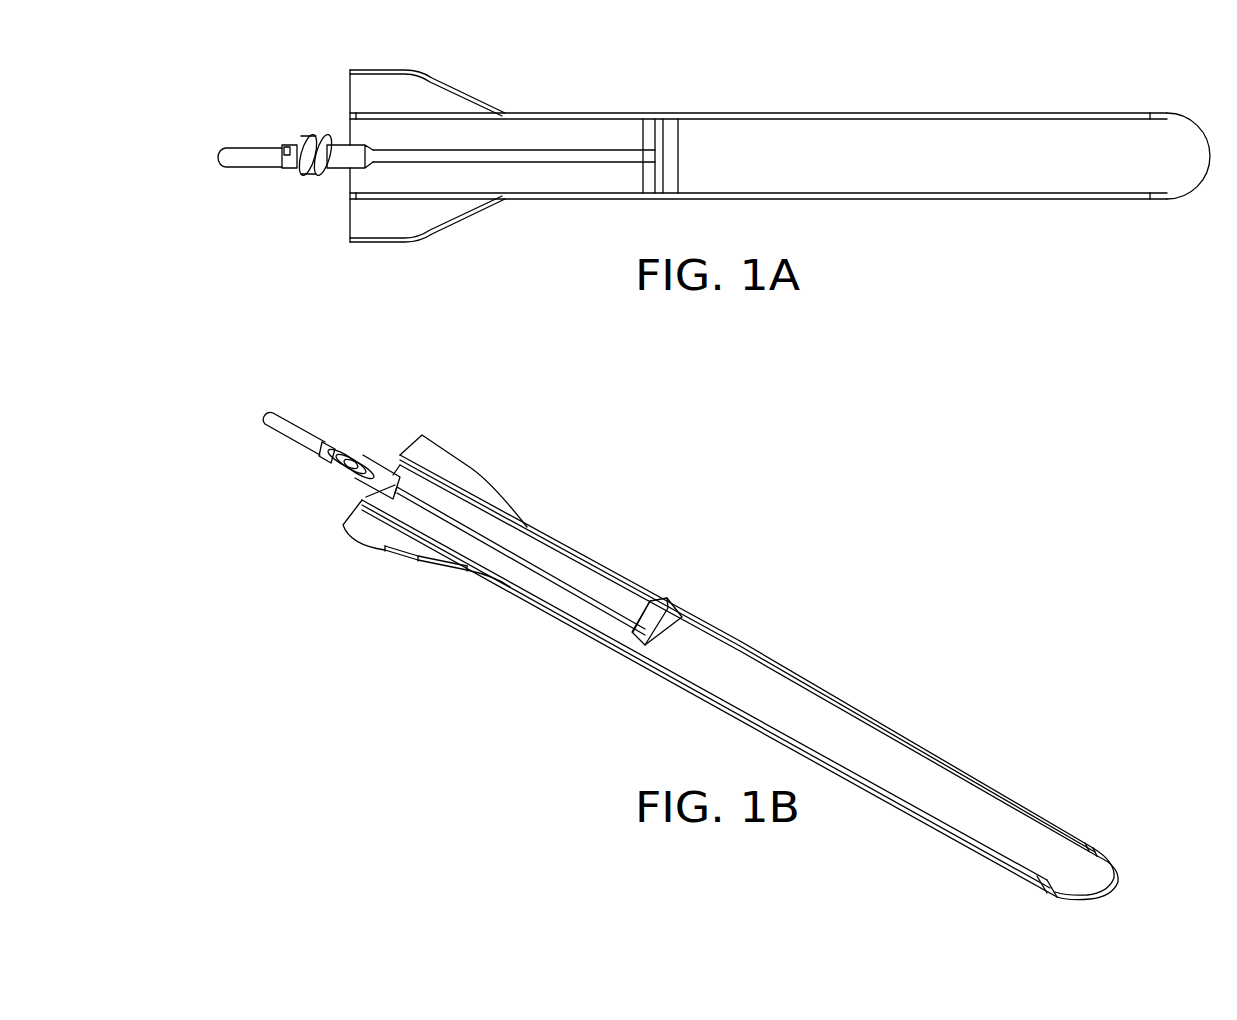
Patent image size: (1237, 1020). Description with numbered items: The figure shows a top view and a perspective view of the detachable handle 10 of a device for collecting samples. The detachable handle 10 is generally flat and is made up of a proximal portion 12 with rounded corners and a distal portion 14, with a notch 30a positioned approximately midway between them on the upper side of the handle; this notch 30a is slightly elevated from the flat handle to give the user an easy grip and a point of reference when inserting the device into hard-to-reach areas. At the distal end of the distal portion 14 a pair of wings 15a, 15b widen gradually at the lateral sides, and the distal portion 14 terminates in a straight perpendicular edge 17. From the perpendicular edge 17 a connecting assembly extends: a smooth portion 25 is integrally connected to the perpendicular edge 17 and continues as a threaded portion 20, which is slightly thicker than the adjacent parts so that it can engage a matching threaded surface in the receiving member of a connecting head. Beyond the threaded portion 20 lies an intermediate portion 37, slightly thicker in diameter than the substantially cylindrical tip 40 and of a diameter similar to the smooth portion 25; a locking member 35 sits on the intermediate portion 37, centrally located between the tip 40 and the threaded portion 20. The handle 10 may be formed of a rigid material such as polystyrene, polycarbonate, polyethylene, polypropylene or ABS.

In FIG. 1A, the detachable handle 10 is at (803, 96).
In FIG. 1B, the detachable handle 10 is at (812, 653).
In FIG. 1A, the proximal portion 12 is at (938, 140).
In FIG. 1B, the proximal portion 12 is at (873, 753).
In FIG. 1A, the distal portion 14 is at (531, 176).
In FIG. 1B, the distal portion 14 is at (533, 579).
In FIG. 1A, the wing 15a is at (392, 217).
In FIG. 1B, the wing 15a is at (378, 524).
In FIG. 1A, the wing 15b is at (391, 93).
In FIG. 1B, the wing 15b is at (448, 465).
In FIG. 1A, the perpendicular edge 17 is at (347, 183).
In FIG. 1B, the perpendicular edge 17 is at (393, 461).
In FIG. 1A, the threaded portion 20 is at (314, 138).
In FIG. 1B, the threaded portion 20 is at (331, 478).
In FIG. 1A, the smooth portion 25 is at (341, 146).
In FIG. 1B, the smooth portion 25 is at (377, 463).
In FIG. 1A, the notch 30a is at (657, 137).
In FIG. 1B, the notch 30a is at (664, 596).
In FIG. 1A, the locking member 35 is at (290, 143).
In FIG. 1B, the locking member 35 is at (327, 443).
In FIG. 1A, the intermediate portion 37 is at (290, 168).
In FIG. 1B, the intermediate portion 37 is at (339, 463).
In FIG. 1A, the tip 40 is at (241, 158).
In FIG. 1B, the tip 40 is at (292, 427).